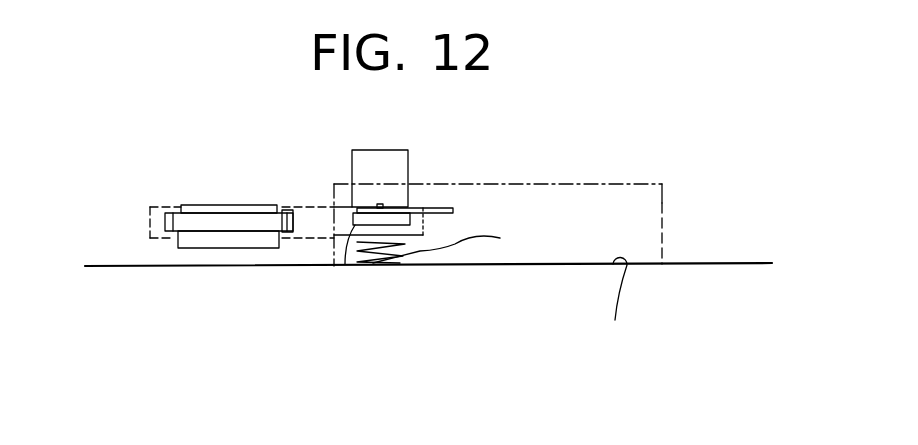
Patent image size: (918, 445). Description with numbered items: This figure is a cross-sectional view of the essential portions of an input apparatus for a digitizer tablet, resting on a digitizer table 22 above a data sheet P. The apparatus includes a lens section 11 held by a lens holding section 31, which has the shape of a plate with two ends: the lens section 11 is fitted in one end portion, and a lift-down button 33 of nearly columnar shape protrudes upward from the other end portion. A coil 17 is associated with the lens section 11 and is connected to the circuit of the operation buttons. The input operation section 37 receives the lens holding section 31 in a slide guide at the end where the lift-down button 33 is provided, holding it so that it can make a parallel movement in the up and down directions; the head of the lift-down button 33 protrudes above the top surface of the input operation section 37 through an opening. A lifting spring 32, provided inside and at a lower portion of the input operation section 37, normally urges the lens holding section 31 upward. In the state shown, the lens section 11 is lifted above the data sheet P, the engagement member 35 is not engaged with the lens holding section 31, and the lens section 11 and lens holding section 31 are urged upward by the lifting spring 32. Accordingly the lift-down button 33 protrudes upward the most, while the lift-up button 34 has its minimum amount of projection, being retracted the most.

The lens section 11 is at (208, 205).
The coil 17 is at (232, 205).
The lens holding section 31 is at (300, 208).
The lift-down button 33 is at (408, 150).
The engagement member 35 is at (453, 210).
The lift-up button 34 is at (348, 262).
The lifting spring 32 is at (469, 239).
The input operation section 37 is at (662, 203).
The data sheet P is at (618, 311).
The digitizer table 22 is at (697, 278).